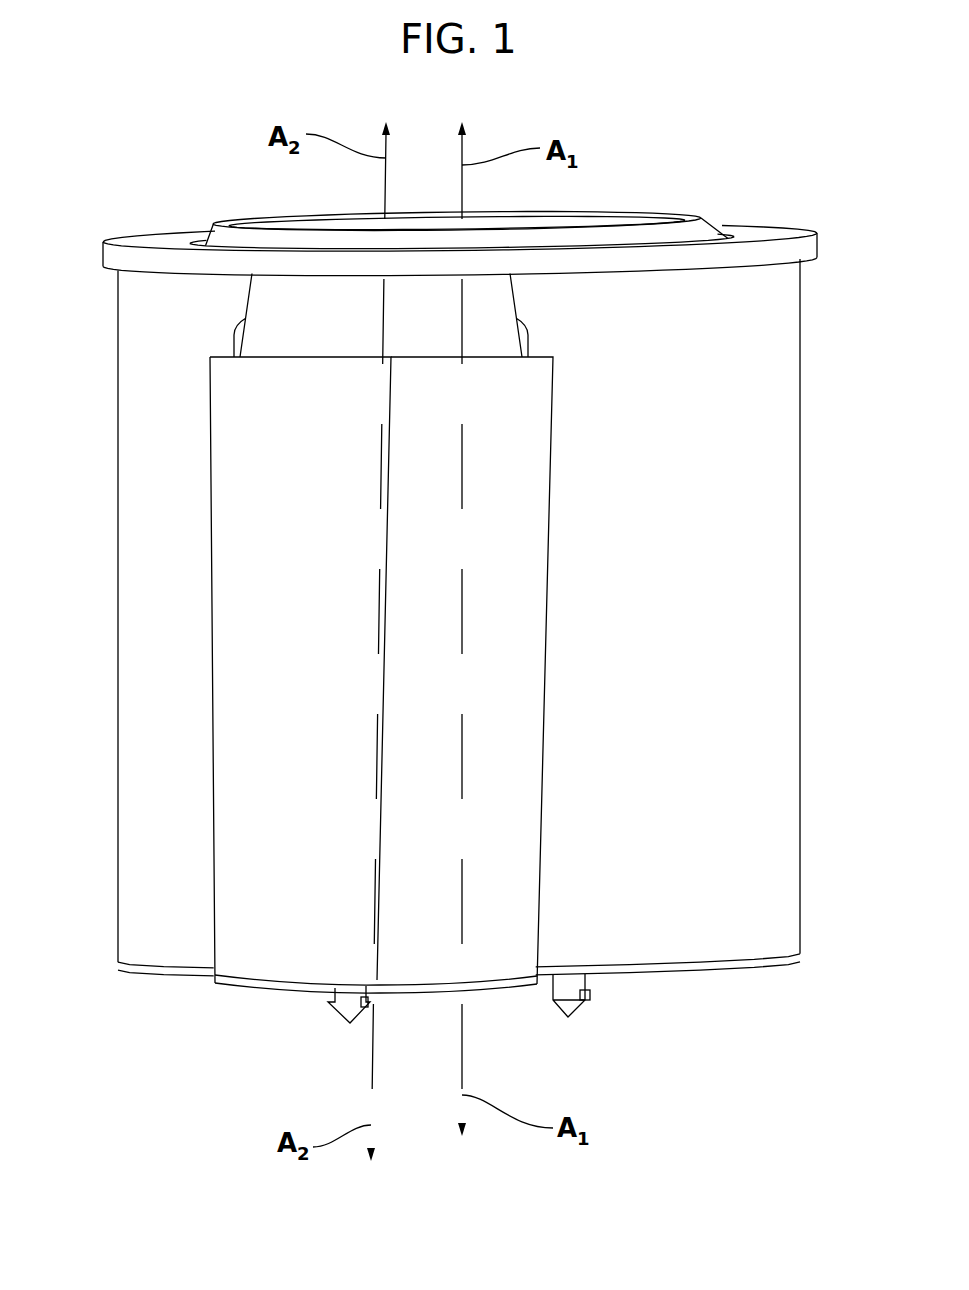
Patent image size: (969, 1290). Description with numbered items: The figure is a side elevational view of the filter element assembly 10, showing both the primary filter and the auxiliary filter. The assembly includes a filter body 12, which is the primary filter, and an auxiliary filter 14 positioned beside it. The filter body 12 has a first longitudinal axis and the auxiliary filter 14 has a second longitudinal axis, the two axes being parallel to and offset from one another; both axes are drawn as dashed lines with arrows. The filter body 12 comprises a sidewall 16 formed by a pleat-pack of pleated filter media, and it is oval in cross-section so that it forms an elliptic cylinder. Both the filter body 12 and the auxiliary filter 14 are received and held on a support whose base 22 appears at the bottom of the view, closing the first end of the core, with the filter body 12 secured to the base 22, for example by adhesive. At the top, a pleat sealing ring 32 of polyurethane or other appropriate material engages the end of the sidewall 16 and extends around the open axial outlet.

The filter element assembly 10 is at (726, 150).
The filter body 12 is at (778, 484).
The auxiliary filter 14 is at (233, 661).
The sidewall 16 is at (714, 665).
The base 22 is at (237, 984).
The pleat sealing ring 32 is at (744, 236).